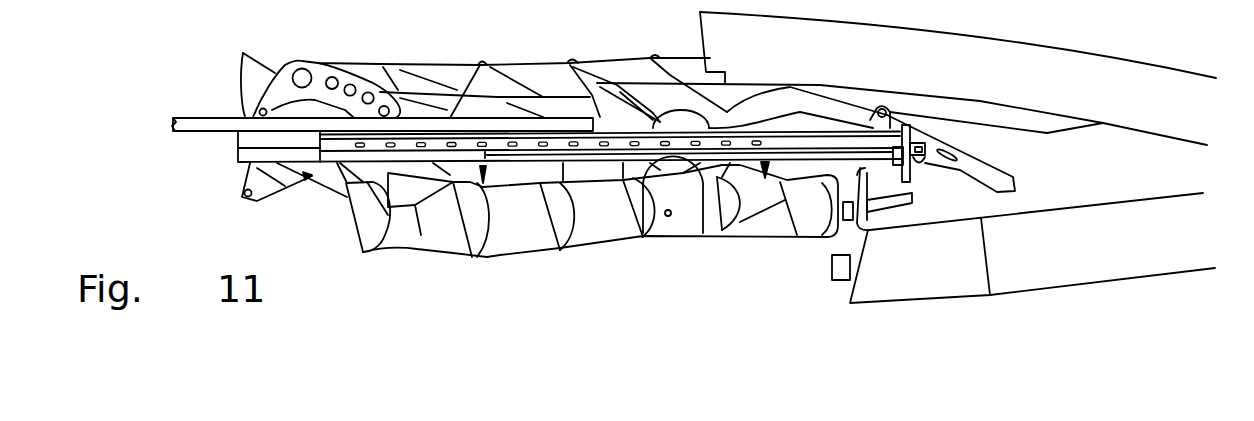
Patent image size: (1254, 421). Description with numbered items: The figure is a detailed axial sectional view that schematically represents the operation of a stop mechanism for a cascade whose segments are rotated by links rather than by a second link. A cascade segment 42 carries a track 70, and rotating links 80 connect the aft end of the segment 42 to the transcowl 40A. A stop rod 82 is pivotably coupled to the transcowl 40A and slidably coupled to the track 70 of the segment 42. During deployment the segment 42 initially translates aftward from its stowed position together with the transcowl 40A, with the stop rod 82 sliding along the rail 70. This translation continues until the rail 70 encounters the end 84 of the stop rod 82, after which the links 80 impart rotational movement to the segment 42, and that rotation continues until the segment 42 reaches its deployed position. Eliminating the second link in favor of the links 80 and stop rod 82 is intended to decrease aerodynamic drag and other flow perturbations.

The track 70 is at (342, 147).
The rotating link 80 is at (797, 95).
The stop rod 82 is at (764, 172).
The end of the stop rod 84 is at (482, 179).
The cascade segment 42 is at (417, 250).
The transcowl 40A is at (925, 283).